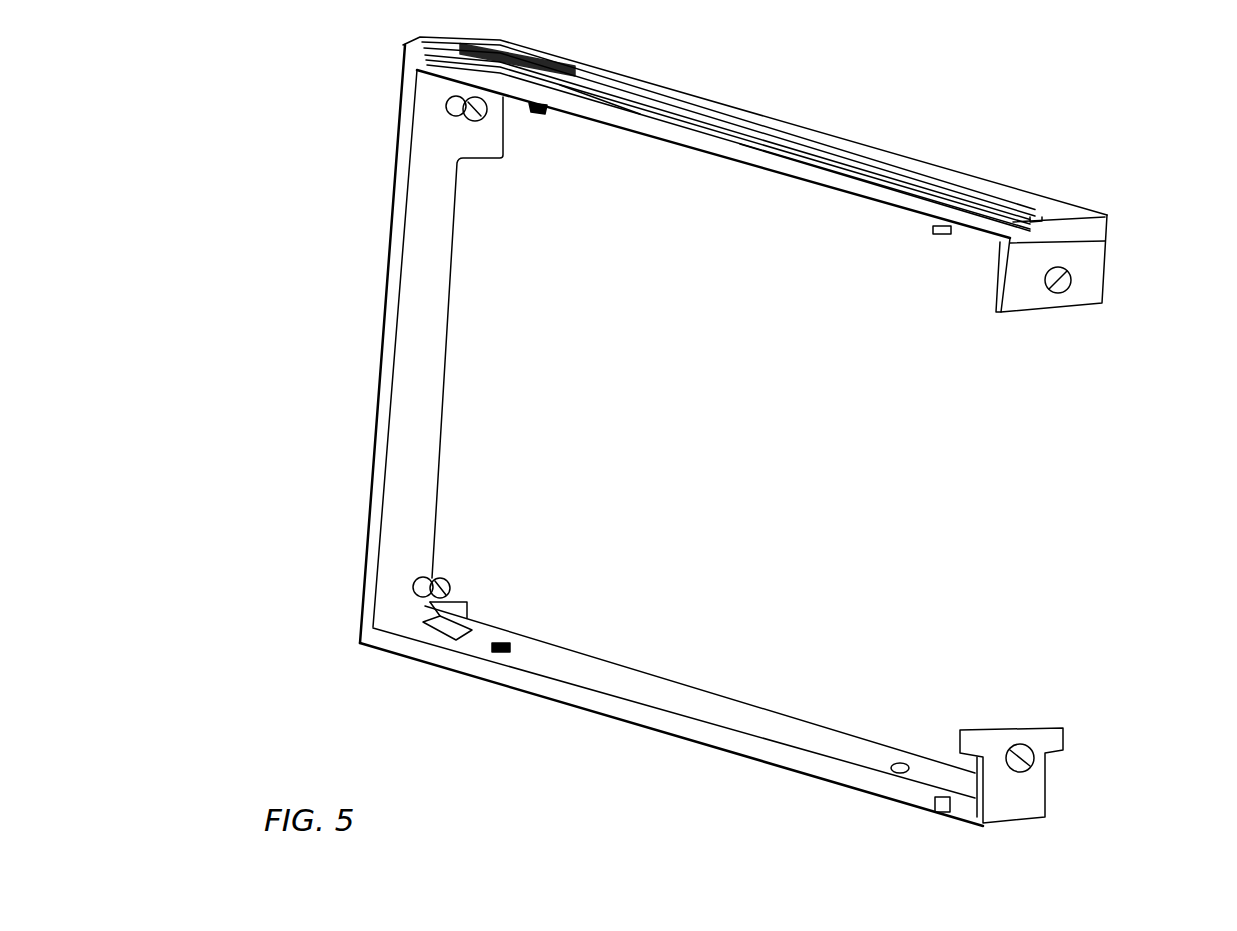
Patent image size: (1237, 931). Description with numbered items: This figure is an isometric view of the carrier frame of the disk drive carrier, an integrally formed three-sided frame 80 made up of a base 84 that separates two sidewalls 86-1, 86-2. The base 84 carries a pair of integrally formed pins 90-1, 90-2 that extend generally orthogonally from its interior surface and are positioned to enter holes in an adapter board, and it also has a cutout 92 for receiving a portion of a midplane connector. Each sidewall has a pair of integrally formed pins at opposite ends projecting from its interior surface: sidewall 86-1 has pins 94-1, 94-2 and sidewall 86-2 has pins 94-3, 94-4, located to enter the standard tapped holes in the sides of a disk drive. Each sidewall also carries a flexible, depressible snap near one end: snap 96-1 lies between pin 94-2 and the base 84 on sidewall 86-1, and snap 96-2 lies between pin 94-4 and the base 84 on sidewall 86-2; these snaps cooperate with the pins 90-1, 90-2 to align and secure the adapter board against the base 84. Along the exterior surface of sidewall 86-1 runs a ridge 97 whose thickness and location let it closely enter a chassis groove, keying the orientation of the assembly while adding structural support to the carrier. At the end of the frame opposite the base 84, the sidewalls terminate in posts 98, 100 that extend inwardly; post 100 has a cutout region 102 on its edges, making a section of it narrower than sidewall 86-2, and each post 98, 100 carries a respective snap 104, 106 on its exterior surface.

The three-sided frame 80 is at (330, 136).
The base 84 is at (400, 355).
The sidewall 86-1 is at (1048, 194).
The sidewall 86-2 is at (685, 700).
The pin 90-1 is at (478, 113).
The pin 90-2 is at (440, 580).
The cutout 92 is at (470, 405).
The pin 94-1 is at (935, 229).
The pin 94-2 is at (536, 110).
The pin 94-3 is at (900, 762).
The pin 94-4 is at (500, 647).
The snap 96-1 is at (503, 40).
The snap 96-2 is at (455, 628).
The ridge 97 is at (901, 174).
The post 98 is at (1025, 291).
The post 100 is at (1012, 797).
The cutout region 102 is at (962, 820).
The snap 104 is at (1071, 274).
The snap 106 is at (1018, 745).